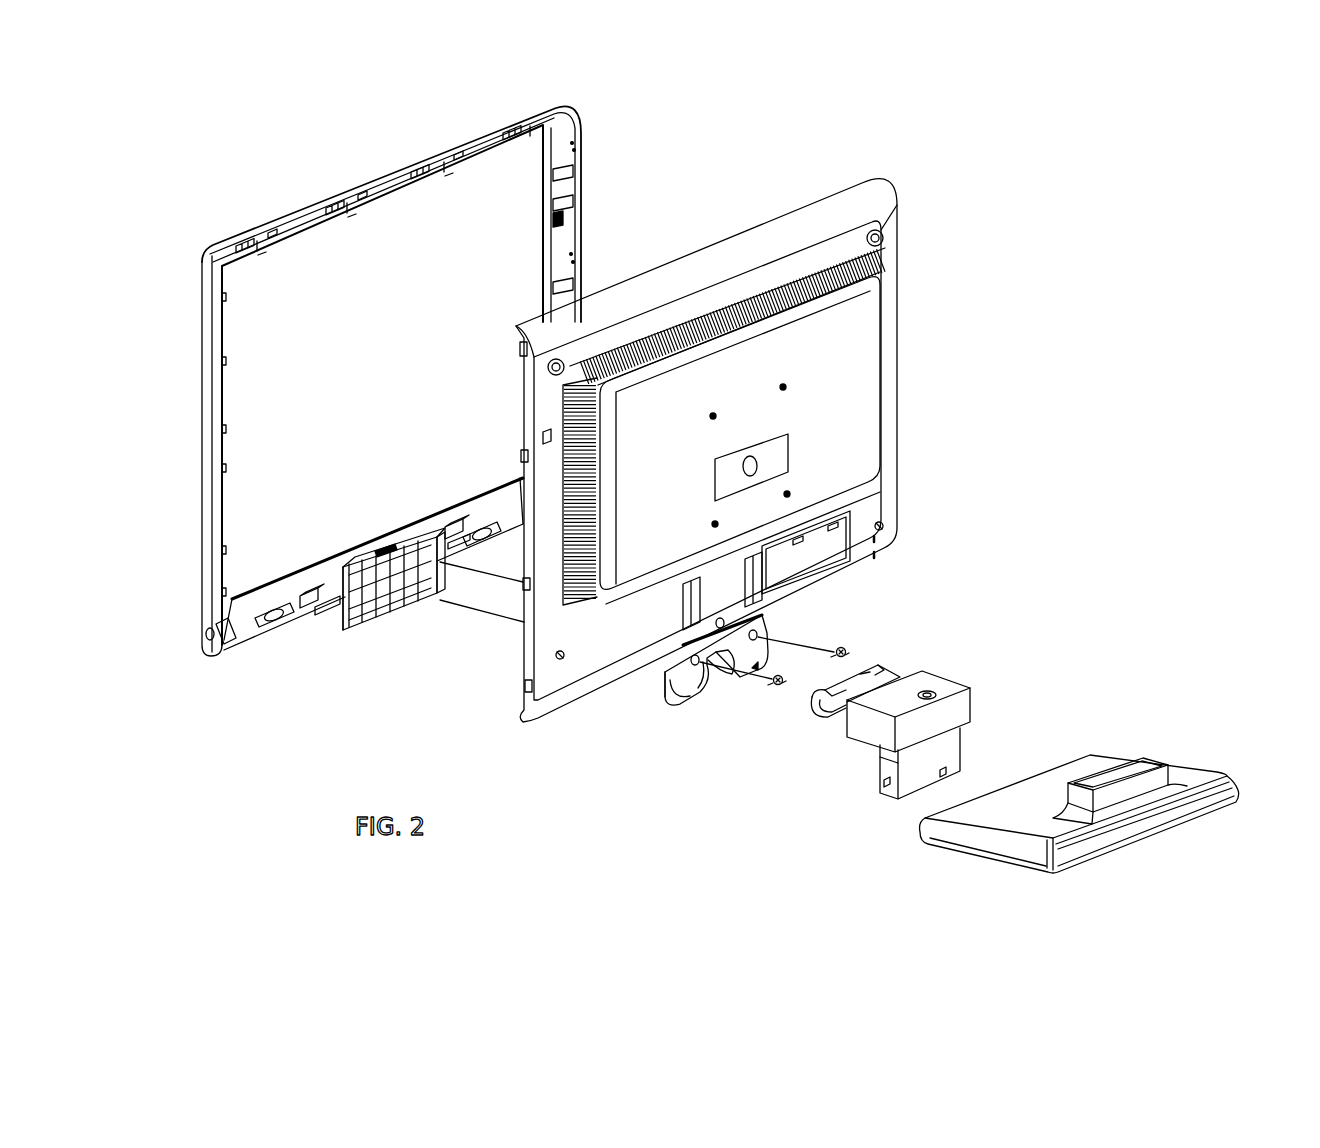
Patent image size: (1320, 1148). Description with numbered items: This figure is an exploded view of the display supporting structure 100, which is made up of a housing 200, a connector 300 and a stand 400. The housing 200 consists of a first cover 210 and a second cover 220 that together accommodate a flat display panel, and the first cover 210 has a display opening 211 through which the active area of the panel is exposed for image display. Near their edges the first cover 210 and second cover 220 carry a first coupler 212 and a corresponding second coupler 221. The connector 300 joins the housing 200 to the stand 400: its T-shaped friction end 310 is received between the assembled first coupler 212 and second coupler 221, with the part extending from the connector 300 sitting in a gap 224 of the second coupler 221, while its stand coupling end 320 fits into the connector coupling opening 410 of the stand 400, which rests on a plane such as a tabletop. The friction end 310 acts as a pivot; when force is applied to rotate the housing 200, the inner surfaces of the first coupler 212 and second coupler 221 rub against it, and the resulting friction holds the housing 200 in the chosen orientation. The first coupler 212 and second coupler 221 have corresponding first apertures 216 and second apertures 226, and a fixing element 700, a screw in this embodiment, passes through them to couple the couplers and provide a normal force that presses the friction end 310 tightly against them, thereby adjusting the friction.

The display supporting structure 100 is at (1062, 441).
The housing 200 is at (728, 163).
The first cover 210 is at (590, 151).
The display opening 211 is at (254, 502).
The first coupler 212 is at (383, 638).
The first aperture 216 is at (348, 624).
The second cover 220 is at (776, 201).
The second coupler 221 is at (697, 695).
The gap 224 is at (722, 690).
The second aperture 226 is at (667, 703).
The connector 300 is at (948, 664).
The friction end 310 is at (809, 706).
The stand coupling end 320 is at (957, 745).
The stand 400 is at (1183, 838).
The connector coupling opening 410 is at (1130, 766).
The fixing element 700 is at (843, 648).